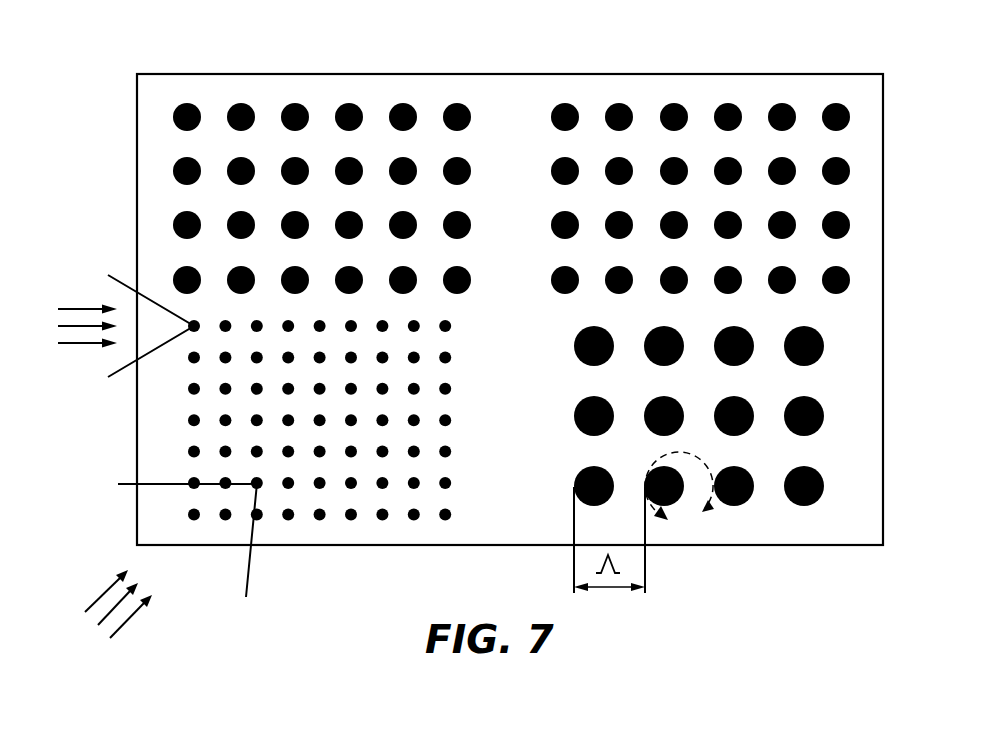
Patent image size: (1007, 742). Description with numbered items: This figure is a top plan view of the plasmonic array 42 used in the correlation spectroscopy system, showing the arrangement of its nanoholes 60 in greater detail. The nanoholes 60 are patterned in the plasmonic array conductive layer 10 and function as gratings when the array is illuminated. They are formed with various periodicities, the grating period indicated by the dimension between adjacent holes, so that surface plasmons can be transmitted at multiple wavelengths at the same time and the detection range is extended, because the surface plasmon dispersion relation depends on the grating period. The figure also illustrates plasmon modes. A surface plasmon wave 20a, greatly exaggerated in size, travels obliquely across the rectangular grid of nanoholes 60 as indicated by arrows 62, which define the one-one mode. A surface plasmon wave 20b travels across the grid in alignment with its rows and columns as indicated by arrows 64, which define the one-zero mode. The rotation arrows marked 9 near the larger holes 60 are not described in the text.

The plasmonic array 42 is at (525, 74).
The plasmonic array conductive layer 10 is at (525, 322).
The surface plasmon wave 20b is at (124, 278).
The surface plasmon wave 20a is at (253, 558).
The arrows 64 is at (80, 344).
The arrows 62 is at (128, 620).
The nanoholes 60 is at (823, 484).
The rotation angle 9 is at (679, 498).